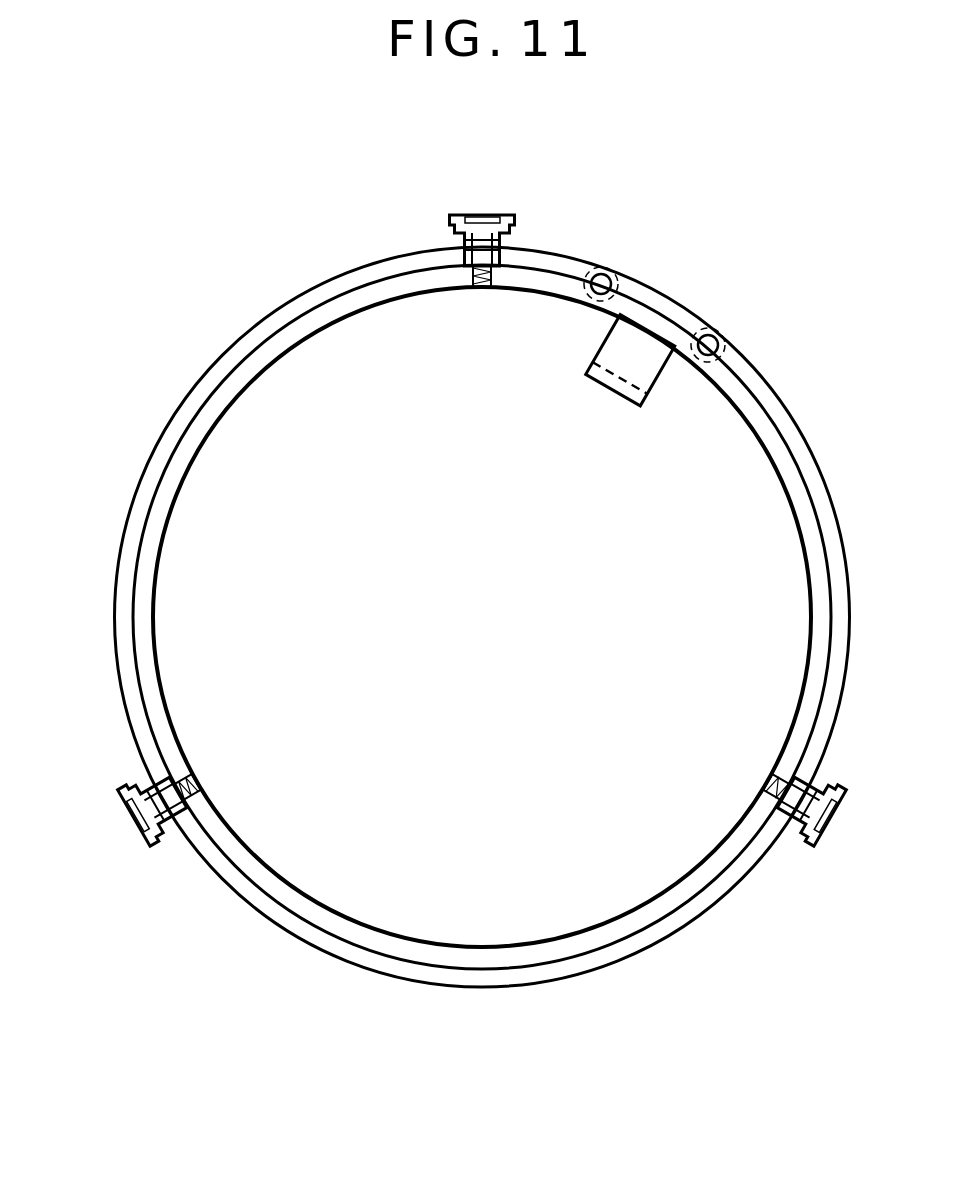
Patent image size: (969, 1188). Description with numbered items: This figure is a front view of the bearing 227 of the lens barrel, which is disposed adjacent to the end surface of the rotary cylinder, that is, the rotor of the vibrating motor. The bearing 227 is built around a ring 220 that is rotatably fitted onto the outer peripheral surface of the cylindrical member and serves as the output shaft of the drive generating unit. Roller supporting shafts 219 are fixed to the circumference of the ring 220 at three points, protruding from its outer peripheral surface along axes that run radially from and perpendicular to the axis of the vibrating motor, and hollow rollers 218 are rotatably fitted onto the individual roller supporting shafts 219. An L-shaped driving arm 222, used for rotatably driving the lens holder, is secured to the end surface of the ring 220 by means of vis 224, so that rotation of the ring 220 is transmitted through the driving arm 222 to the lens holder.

The bearing 227 is at (302, 262).
The ring 220 is at (231, 384).
The hollow roller 218 is at (513, 236).
The roller supporting shaft 219 is at (481, 217).
The L-shaped driving arm 222 is at (641, 343).
The vis 224 is at (719, 346).